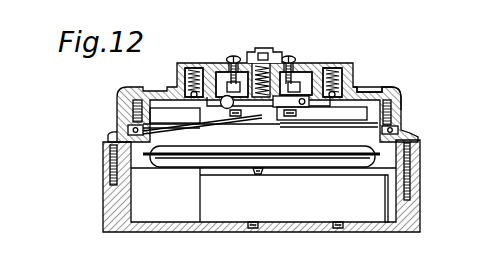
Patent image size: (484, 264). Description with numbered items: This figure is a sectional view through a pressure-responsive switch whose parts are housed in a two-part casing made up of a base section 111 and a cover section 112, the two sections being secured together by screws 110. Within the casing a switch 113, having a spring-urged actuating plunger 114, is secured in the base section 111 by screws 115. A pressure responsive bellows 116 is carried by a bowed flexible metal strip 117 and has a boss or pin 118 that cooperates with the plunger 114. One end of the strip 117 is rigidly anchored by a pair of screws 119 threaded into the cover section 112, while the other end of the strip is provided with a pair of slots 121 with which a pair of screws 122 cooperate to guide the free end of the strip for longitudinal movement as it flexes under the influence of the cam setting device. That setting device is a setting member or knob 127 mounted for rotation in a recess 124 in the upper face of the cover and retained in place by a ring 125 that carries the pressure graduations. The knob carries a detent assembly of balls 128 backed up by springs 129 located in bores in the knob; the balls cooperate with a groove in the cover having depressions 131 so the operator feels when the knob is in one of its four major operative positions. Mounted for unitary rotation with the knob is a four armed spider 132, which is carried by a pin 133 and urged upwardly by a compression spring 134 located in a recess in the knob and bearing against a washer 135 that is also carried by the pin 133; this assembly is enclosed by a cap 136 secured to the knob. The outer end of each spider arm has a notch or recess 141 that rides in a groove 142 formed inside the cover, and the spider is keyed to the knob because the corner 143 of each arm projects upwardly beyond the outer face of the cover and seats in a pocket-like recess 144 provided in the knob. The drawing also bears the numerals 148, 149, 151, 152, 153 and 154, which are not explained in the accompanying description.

The screws 110 is at (408, 182).
The base section 111 is at (414, 212).
The cover section 112 is at (417, 139).
The switch 113 is at (212, 198).
The actuating plunger 114 is at (267, 175).
The screws 115 is at (339, 233).
The pressure responsive bellows 116 is at (172, 162).
The bowed flexible metal strip 117 is at (118, 139).
The boss or pin 118 is at (256, 175).
The screws 119 is at (128, 129).
The slots 121 is at (368, 125).
The screws 122 is at (403, 128).
The recess 124 is at (395, 90).
The ring 125 is at (365, 89).
The setting member or knob 127 is at (332, 68).
The balls 128 is at (343, 95).
The springs 129 is at (338, 68).
The depressions 131 is at (175, 116).
The four armed spider 132 is at (211, 134).
The pin 133 is at (264, 63).
The compression spring 134 is at (285, 57).
The washer 135 is at (250, 48).
The cap 136 is at (246, 57).
The notch or recess 141 is at (322, 114).
The groove 142 is at (194, 68).
The corner 143 is at (203, 68).
The pocket-like recess 144 is at (304, 70).
The screw 148 is at (294, 115).
The leaf spring 149 is at (240, 126).
The contact 151 is at (291, 102).
The terminal 152 is at (202, 261).
The terminal 153 is at (290, 261).
The terminal 154 is at (248, 261).